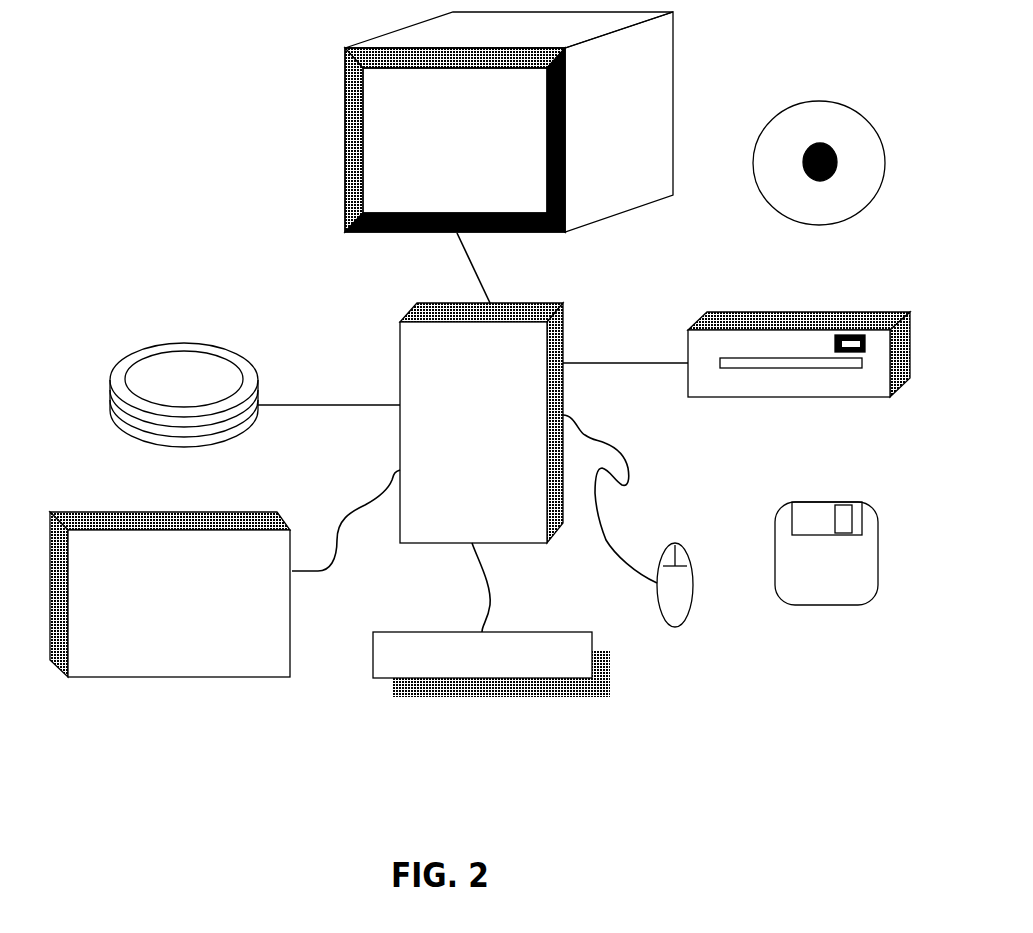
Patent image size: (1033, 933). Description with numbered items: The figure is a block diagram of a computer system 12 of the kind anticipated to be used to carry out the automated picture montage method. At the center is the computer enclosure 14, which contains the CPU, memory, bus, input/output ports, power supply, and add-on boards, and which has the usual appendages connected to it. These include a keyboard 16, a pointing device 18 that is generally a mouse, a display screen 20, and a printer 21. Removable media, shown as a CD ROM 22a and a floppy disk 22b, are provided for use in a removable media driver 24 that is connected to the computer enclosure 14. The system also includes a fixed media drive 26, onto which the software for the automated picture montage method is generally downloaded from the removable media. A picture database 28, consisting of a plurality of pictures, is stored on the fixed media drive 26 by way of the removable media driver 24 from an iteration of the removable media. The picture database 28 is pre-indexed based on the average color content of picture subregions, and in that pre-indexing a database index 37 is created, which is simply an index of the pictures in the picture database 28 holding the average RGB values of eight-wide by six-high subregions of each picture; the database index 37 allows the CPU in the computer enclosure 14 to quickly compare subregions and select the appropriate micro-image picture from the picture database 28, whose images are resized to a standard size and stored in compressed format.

The computer system 12 is at (214, 157).
The computer enclosure 14 is at (499, 478).
The keyboard 16 is at (557, 660).
The pointing device 18 is at (680, 603).
The display screen 20 is at (480, 191).
The printer 21 is at (225, 658).
The CD ROM 22a is at (843, 203).
The floppy disk 22b is at (860, 575).
The removable media driver 24 is at (860, 387).
The fixed media drive 26 is at (193, 385).
The picture database 28 is at (167, 377).
The database index 37 is at (222, 353).